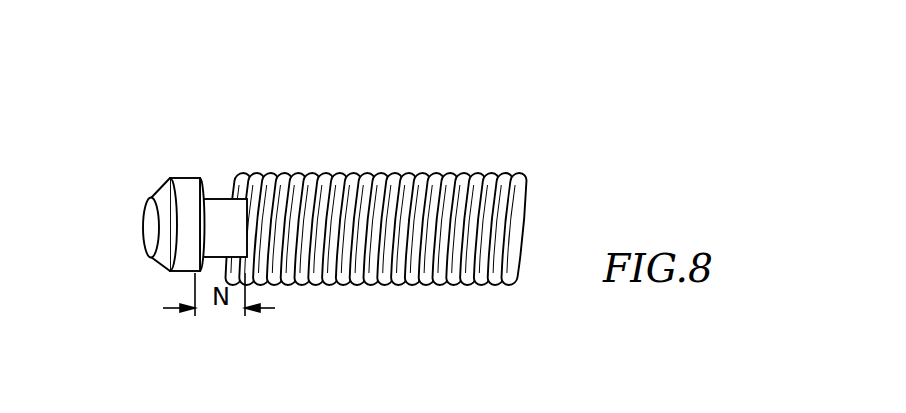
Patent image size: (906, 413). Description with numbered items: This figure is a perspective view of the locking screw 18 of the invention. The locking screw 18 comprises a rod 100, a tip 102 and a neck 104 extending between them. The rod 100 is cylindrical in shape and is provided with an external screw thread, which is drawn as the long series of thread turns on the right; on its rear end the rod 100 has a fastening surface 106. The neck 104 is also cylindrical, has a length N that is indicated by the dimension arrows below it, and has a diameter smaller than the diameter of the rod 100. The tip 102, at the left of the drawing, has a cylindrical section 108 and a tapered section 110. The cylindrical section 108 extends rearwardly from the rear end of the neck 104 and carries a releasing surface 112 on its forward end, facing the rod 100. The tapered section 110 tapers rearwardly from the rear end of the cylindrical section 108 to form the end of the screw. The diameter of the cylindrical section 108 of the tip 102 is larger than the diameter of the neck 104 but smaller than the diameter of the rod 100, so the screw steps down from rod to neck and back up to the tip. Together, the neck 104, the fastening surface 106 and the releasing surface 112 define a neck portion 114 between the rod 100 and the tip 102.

The locking screw 18 is at (93, 199).
The rod 100 is at (446, 147).
The tip 102 is at (194, 142).
The neck 104 is at (222, 212).
The fastening surface 106 is at (238, 173).
The cylindrical section 108 is at (191, 264).
The tapered section 110 is at (165, 255).
The releasing surface 112 is at (203, 193).
The neck portion 114 is at (231, 170).